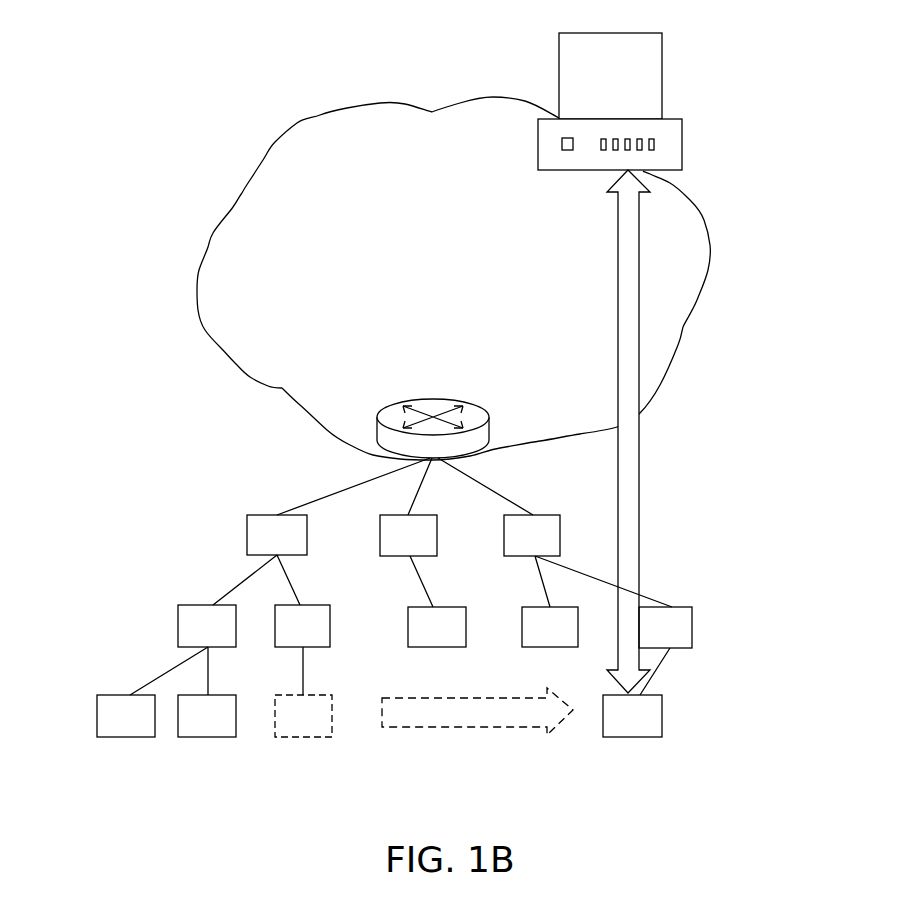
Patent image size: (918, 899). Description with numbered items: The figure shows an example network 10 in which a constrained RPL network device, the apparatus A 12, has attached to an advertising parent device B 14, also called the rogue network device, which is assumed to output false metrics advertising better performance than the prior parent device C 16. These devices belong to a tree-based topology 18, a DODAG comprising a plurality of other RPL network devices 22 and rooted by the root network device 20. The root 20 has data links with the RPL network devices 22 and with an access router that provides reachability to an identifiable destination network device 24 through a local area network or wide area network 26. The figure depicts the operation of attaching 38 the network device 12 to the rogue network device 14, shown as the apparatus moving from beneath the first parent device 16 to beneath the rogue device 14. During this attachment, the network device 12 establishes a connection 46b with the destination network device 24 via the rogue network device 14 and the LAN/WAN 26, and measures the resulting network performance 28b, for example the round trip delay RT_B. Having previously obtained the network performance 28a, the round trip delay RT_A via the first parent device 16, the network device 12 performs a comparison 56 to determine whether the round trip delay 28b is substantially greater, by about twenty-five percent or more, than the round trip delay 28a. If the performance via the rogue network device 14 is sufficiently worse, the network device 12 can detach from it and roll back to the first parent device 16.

The network 10 is at (143, 175).
The local area network and/or wide area network 26 is at (223, 235).
The destination network device 24 is at (652, 75).
The root network device 20 is at (488, 443).
The connection 46b is at (640, 455).
The tree-based topology 18 is at (227, 473).
The RPL network devices 22 is at (247, 548).
The prior parent device 16 is at (317, 612).
The advertising parent device 14 is at (672, 607).
The apparatus 12 is at (280, 737).
The attaching 38 is at (487, 740).
The comparison 56 is at (750, 680).
The network performance via the rogue network device 28b is at (703, 712).
The network performance via the first parent device 28a is at (790, 712).